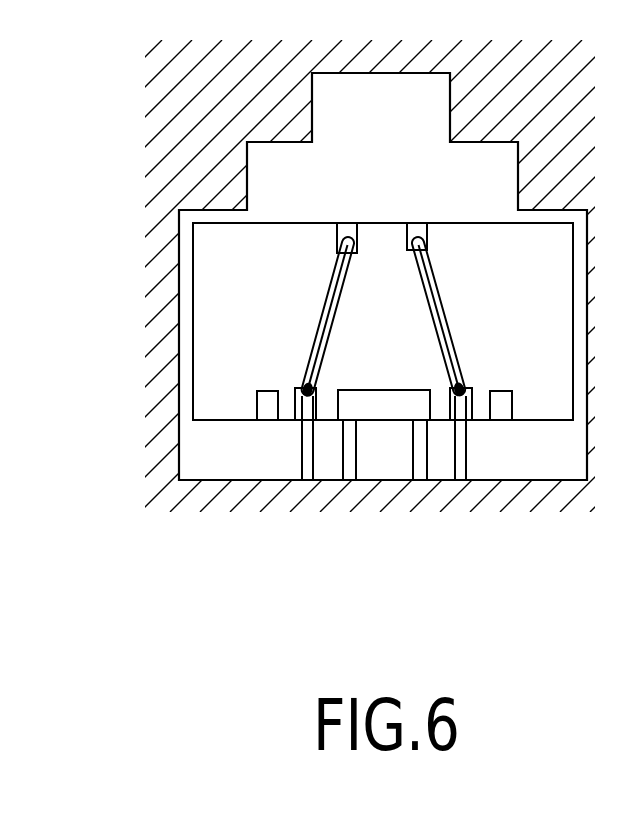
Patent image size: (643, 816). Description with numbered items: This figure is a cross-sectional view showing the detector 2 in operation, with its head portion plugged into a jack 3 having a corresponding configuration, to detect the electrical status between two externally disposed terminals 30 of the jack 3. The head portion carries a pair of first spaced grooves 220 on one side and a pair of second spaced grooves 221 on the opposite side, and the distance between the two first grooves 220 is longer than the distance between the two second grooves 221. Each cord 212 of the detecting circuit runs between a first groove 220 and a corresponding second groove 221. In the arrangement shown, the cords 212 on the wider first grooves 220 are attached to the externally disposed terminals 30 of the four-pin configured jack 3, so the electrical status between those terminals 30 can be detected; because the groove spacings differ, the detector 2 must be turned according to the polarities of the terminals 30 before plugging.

The jack 3 is at (178, 167).
The detector 2 is at (384, 232).
The second spaced grooves 221 is at (345, 232).
The cords 212 is at (337, 290).
The first spaced grooves 220 is at (298, 398).
The terminals 30 is at (308, 481).